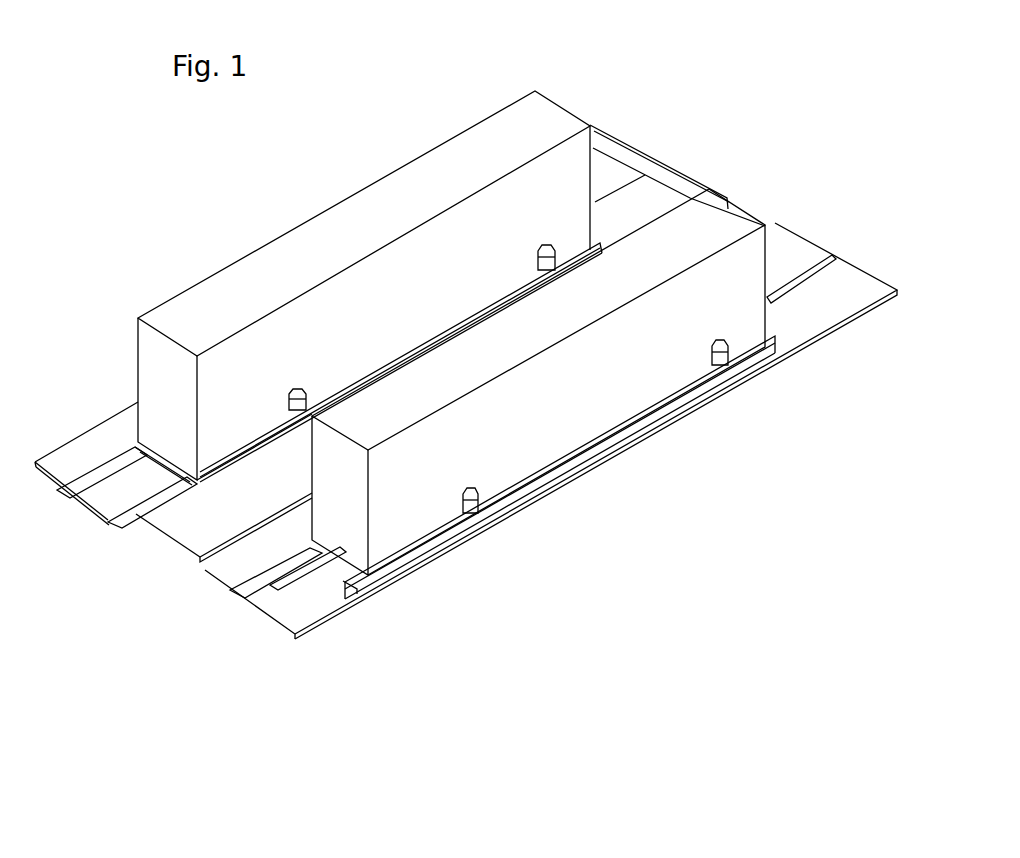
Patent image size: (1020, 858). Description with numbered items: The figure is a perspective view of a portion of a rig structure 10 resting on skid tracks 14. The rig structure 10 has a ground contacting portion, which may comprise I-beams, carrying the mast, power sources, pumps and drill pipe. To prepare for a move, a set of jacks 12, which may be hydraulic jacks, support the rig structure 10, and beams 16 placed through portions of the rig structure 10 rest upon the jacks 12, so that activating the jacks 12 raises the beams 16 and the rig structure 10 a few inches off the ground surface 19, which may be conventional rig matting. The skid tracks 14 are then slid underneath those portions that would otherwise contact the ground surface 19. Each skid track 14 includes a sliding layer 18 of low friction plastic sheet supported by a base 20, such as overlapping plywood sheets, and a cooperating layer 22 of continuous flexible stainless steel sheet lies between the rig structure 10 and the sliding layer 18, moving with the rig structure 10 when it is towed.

The rig structure 10 is at (230, 300).
The jacks 12 is at (467, 513).
The skid tracks 14 is at (61, 504).
The beams 16 is at (463, 495).
The sliding layer 18 is at (72, 487).
The ground surface 19 is at (227, 560).
The base 20 is at (283, 578).
The cooperating layer 22 is at (355, 583).